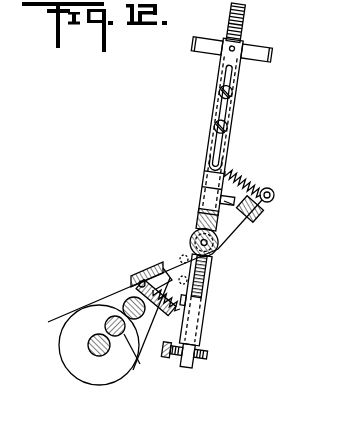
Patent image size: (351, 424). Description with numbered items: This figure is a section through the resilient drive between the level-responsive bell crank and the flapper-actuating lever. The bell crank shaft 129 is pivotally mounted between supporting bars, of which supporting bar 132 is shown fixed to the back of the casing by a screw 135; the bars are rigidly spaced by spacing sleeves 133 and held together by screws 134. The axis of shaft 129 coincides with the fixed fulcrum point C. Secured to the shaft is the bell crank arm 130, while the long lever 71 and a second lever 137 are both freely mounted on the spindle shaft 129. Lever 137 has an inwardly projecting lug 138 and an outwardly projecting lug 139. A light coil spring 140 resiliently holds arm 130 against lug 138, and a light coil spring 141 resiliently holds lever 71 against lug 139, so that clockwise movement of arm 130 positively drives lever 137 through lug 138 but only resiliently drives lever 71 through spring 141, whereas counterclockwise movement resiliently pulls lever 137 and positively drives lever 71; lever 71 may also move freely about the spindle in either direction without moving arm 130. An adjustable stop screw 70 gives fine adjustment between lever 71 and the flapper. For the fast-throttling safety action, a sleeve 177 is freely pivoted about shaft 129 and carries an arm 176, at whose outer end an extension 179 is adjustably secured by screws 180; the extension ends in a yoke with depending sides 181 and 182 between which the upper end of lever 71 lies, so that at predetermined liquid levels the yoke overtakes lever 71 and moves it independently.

The long lever 71 is at (233, 18).
The depending side of yoke member 181 is at (192, 49).
The depending side of yoke member 182 is at (279, 57).
The extension 179 is at (216, 84).
The screws 180 is at (236, 98).
The arm 176 is at (218, 169).
The light coil spring 141 is at (230, 176).
The outwardly projecting lug 139 is at (221, 184).
The fixed fulcrum point C is at (197, 226).
The sleeve 177 is at (195, 237).
The lever 137 is at (242, 213).
The shaft 129 is at (217, 247).
The spacing sleeves 133 is at (128, 297).
The screws 134 is at (124, 305).
The inwardly projecting lug 138 is at (199, 296).
The arm 130 is at (202, 313).
The light coil spring 140 is at (163, 312).
The adjustable stop screw 70 is at (203, 353).
The screw 135 is at (147, 336).
The supporting bar 132 is at (84, 368).